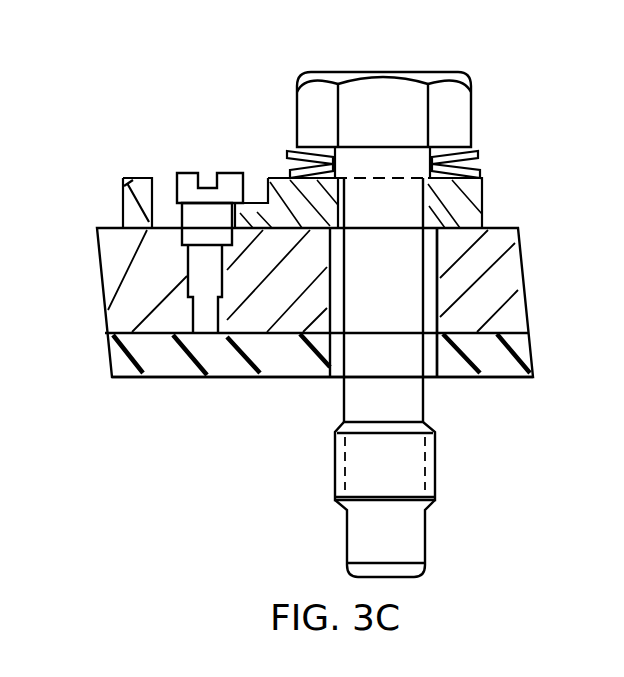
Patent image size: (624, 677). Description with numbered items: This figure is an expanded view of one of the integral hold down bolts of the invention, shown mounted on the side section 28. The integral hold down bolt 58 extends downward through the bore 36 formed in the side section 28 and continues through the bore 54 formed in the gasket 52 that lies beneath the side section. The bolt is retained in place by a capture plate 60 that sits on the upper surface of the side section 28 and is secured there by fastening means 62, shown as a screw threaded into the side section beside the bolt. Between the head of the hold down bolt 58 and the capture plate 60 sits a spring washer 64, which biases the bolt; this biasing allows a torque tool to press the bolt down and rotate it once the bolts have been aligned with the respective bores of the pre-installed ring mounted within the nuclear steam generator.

The side section 28 is at (110, 268).
The bore 36 is at (447, 280).
The gasket 52 is at (182, 380).
The bore 54 is at (331, 379).
The integral hold down bolt 58 is at (406, 64).
The capture plate 60 is at (124, 201).
The fastening means 62 is at (176, 171).
The spring washer 64 is at (478, 154).